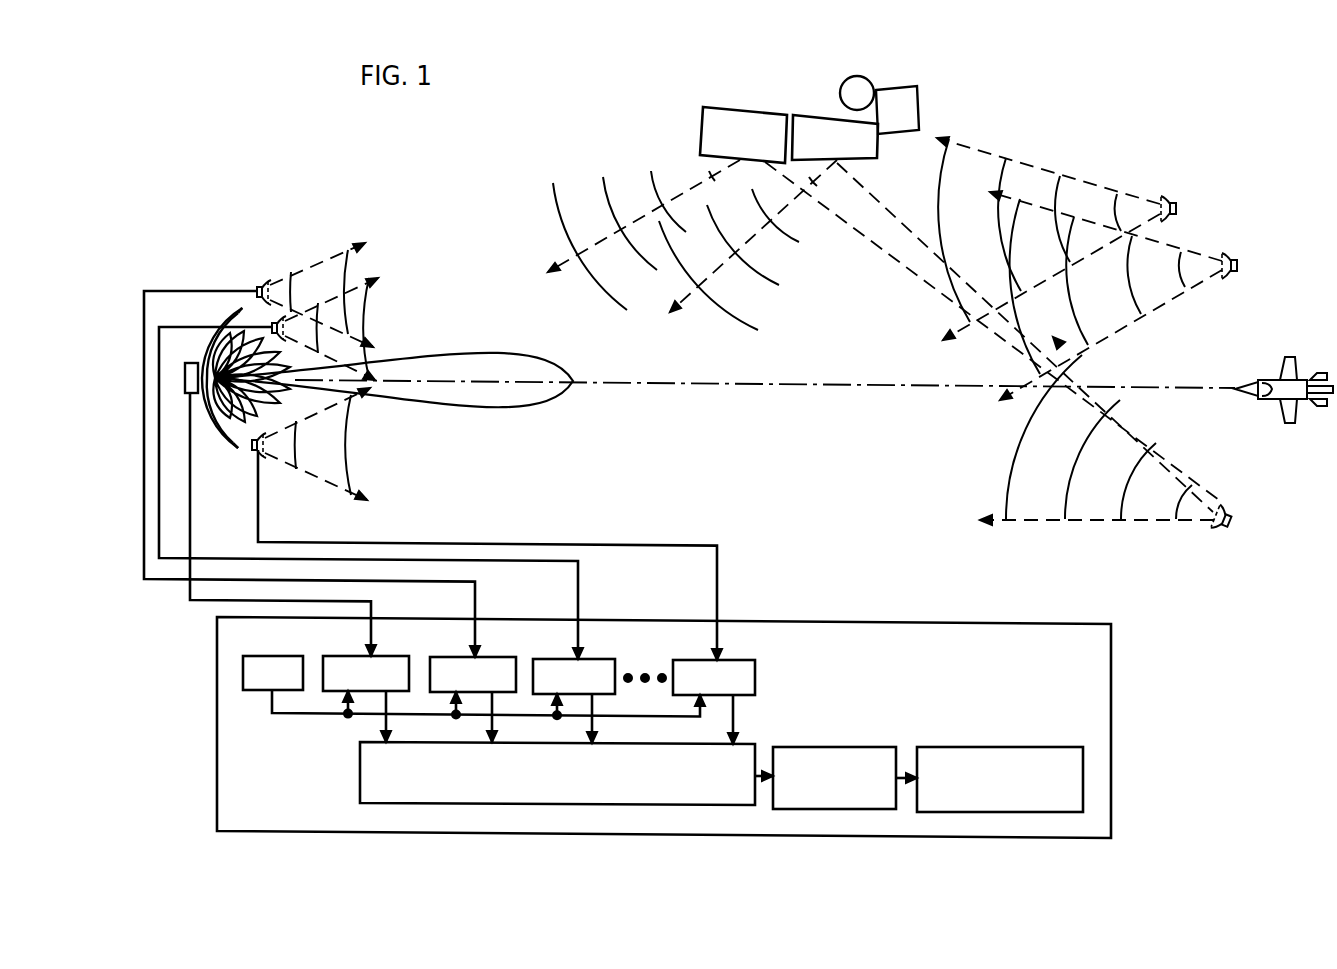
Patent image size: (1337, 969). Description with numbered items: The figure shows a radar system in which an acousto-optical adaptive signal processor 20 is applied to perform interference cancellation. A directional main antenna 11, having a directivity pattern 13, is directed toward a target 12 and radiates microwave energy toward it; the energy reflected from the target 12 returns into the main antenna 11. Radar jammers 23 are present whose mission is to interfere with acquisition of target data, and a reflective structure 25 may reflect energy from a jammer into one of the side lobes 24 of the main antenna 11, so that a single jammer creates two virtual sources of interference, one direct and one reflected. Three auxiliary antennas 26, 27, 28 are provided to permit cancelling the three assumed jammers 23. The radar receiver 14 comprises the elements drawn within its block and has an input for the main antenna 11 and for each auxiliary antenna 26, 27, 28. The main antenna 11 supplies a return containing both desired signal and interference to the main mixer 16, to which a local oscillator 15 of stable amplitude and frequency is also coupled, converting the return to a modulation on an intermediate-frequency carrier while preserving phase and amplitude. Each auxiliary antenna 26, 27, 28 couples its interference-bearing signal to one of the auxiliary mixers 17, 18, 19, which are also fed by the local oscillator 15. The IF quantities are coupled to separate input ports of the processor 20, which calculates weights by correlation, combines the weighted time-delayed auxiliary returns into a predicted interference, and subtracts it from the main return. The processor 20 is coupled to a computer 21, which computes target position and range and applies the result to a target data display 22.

The directional main antenna 11 is at (226, 318).
The target 12 is at (1288, 352).
The directivity pattern 13 is at (497, 356).
The radar receiver 14 is at (1111, 714).
The local oscillator 15 is at (254, 694).
The main mixer 16 is at (388, 657).
The auxiliary mixer 17 is at (495, 657).
The auxiliary mixer 18 is at (598, 659).
The auxiliary mixer 19 is at (744, 660).
The acousto-optical adaptive signal processor 20 is at (358, 775).
The computer 21 is at (836, 747).
The target data display 22 is at (989, 747).
The radar jammers 23 is at (1237, 262).
The side lobes 24 is at (237, 448).
The structure 25 is at (700, 124).
The auxiliary antenna 26 is at (254, 455).
The auxiliary antenna 27 is at (281, 322).
The auxiliary antenna 28 is at (262, 286).